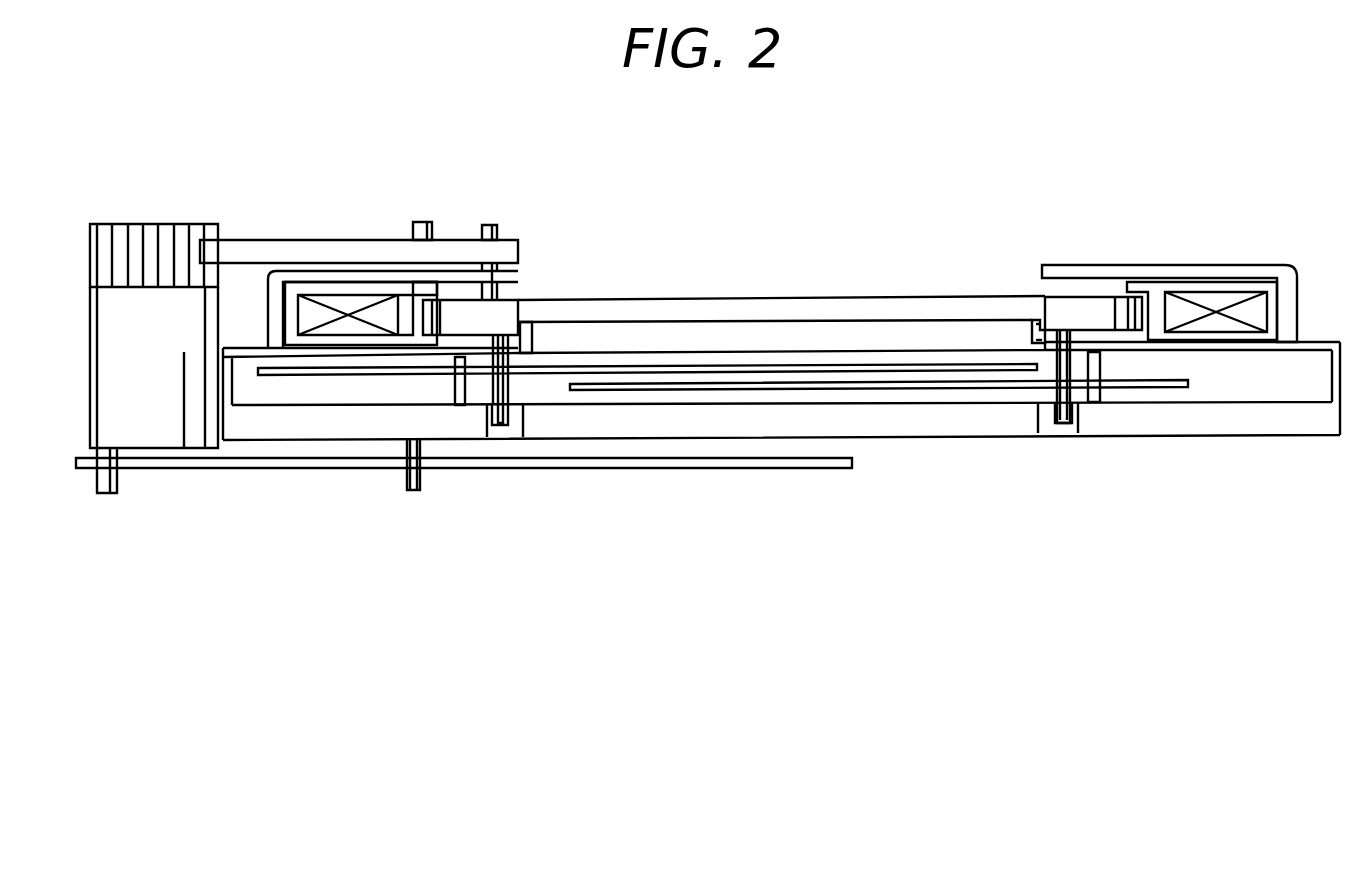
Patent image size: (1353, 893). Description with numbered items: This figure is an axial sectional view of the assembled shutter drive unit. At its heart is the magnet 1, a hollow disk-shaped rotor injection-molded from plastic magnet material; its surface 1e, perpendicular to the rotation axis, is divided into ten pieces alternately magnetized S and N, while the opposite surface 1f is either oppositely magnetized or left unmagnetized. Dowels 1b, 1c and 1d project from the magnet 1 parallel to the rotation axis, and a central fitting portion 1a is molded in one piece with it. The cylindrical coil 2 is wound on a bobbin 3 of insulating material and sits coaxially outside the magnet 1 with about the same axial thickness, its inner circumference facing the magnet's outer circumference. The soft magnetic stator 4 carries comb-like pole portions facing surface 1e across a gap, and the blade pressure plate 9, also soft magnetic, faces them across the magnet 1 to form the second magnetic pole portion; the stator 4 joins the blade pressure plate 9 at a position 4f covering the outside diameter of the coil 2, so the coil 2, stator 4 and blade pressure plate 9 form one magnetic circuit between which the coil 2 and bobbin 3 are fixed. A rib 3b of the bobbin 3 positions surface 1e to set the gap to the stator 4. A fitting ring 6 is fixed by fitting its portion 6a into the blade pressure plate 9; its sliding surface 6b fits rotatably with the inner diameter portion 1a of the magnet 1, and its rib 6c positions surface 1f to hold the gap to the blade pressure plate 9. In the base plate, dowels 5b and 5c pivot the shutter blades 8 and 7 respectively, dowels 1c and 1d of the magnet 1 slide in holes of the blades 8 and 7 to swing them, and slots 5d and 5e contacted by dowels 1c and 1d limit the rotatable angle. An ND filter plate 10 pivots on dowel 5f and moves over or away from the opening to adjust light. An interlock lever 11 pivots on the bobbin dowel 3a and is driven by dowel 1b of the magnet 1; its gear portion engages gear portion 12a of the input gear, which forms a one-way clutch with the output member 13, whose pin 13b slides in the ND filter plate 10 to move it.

The magnet 1 is at (517, 308).
The central fitting portion 1a is at (520, 310).
The dowel 1b is at (497, 232).
The dowel 1c is at (1058, 370).
The dowel 1d is at (502, 415).
The surface of magnet 1e is at (1090, 297).
The surface of magnet 1f is at (1117, 333).
The coil 2 is at (1247, 305).
The bobbin 3 is at (320, 285).
The dowel of bobbin 3a is at (420, 223).
The rib of bobbin 3b is at (432, 288).
The stator 4 is at (1153, 265).
The connecting position of stator 4f is at (280, 347).
The dowel of base plate 5b is at (1097, 373).
The dowel of base plate 5c is at (465, 385).
The slot of base plate 5d is at (1063, 423).
The slot of base plate 5e is at (498, 432).
The dowel of base plate 5f is at (405, 490).
The fitting ring 6 is at (1032, 343).
The fitting portion of fitting ring 6a is at (535, 350).
The sliding surface of fitting ring 6b is at (1040, 323).
The rib of fitting ring 6c is at (1032, 345).
The shutter blade 7 is at (653, 368).
The shutter blade 8 is at (793, 387).
The blade pressure plate 9 is at (1316, 342).
The ND filter plate 10 is at (297, 470).
The interlock lever 11 is at (350, 250).
The gear portion of input gear 12a is at (122, 223).
The output member 13 is at (148, 428).
The pin of output member 13b is at (104, 495).